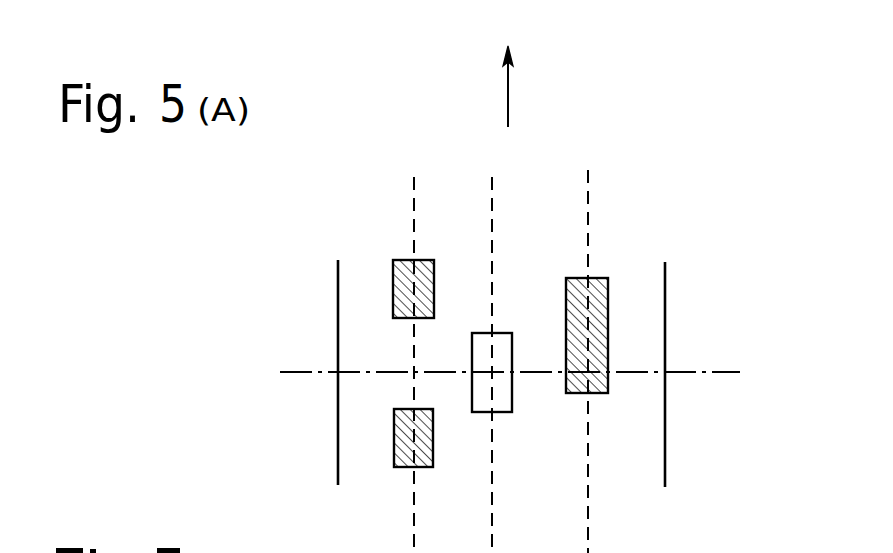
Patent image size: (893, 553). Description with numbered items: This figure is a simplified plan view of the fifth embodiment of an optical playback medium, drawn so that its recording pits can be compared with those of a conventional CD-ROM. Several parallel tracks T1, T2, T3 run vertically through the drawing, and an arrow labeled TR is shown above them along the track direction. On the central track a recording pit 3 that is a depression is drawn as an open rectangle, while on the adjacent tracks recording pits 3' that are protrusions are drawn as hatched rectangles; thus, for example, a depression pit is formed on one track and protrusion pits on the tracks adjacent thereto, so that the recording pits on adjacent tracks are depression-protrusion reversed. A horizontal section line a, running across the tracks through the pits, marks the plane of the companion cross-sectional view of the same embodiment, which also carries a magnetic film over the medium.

The recording pit 3 is at (630, 312).
The recording pit 3' is at (488, 363).
The track T1 is at (414, 190).
The track T2 is at (492, 212).
The third track T3 is at (588, 182).
The track direction TR is at (511, 67).
The section line a-a' a is at (507, 374).